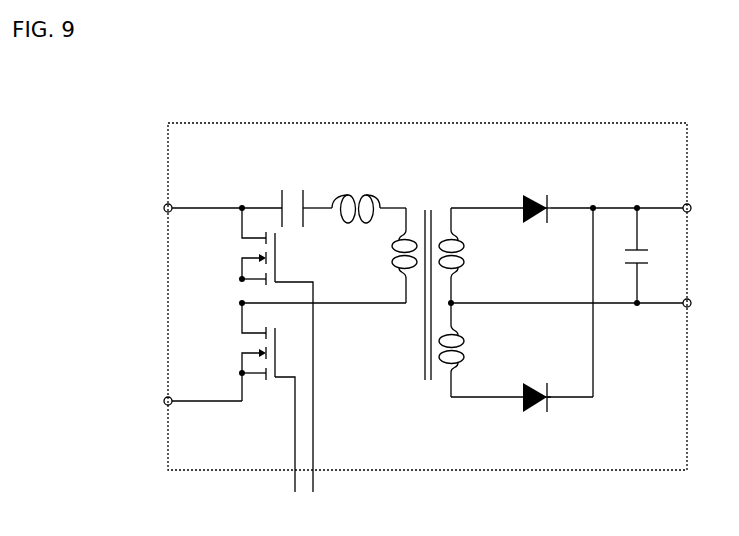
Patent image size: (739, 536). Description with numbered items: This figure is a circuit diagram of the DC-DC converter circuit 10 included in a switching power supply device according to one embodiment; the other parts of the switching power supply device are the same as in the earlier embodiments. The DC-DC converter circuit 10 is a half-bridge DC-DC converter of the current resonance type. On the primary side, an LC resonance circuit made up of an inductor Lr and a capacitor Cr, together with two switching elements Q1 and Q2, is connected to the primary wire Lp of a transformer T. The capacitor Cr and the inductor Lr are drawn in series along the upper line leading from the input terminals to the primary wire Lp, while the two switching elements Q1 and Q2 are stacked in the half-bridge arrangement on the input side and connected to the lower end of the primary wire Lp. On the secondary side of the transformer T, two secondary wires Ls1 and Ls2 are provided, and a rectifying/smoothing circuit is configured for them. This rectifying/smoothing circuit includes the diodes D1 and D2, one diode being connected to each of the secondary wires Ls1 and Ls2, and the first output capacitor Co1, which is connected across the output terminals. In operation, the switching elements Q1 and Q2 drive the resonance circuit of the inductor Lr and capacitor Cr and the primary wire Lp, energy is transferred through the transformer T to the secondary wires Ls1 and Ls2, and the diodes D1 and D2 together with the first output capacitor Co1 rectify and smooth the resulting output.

The DC-DC converter circuit 10 is at (464, 123).
The capacitor Cr is at (290, 195).
The inductor Lr is at (356, 193).
The switching element Q1 is at (236, 341).
The switching element Q2 is at (236, 246).
The transformer T is at (425, 277).
The primary wire Lp is at (385, 255).
The secondary wire Ls1 is at (471, 255).
The secondary wire Ls2 is at (471, 350).
The diode D1 is at (535, 195).
The diode D2 is at (535, 385).
The first output capacitor Co1 is at (652, 255).